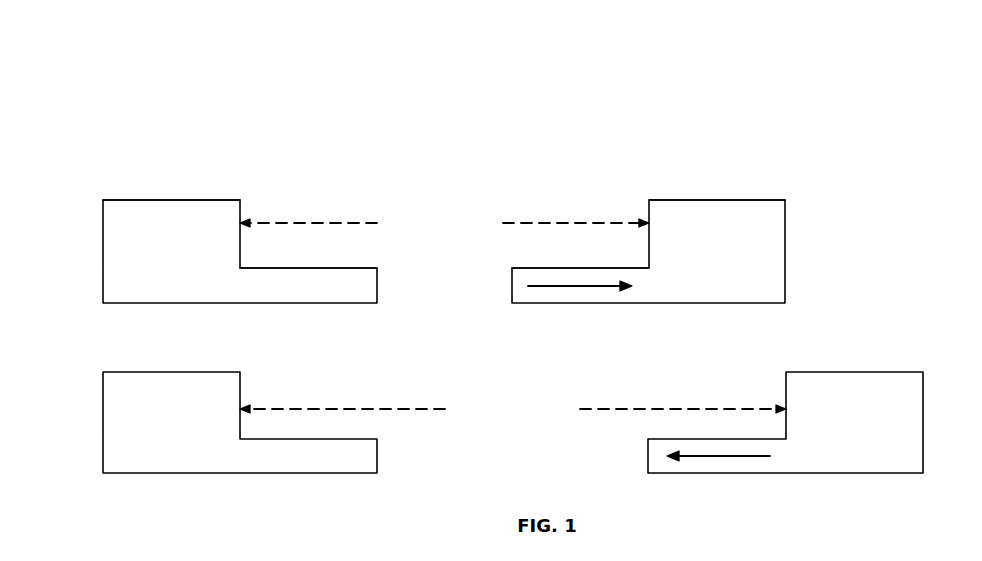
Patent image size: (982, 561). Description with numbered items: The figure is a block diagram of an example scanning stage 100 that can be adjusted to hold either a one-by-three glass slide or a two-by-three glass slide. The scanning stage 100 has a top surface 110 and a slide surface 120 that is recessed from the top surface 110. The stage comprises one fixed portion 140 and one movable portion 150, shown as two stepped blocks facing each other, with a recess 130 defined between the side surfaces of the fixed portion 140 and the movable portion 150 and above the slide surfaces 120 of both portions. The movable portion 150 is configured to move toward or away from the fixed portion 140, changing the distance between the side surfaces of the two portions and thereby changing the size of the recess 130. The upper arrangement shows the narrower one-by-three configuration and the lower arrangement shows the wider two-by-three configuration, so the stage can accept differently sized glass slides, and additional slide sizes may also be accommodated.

The scanning stage 100 is at (108, 167).
The top surface 110 is at (727, 188).
The slide surface 120 is at (572, 262).
The recess 130 is at (513, 317).
The fixed portion 140 is at (240, 336).
The movable portion 150 is at (717, 336).